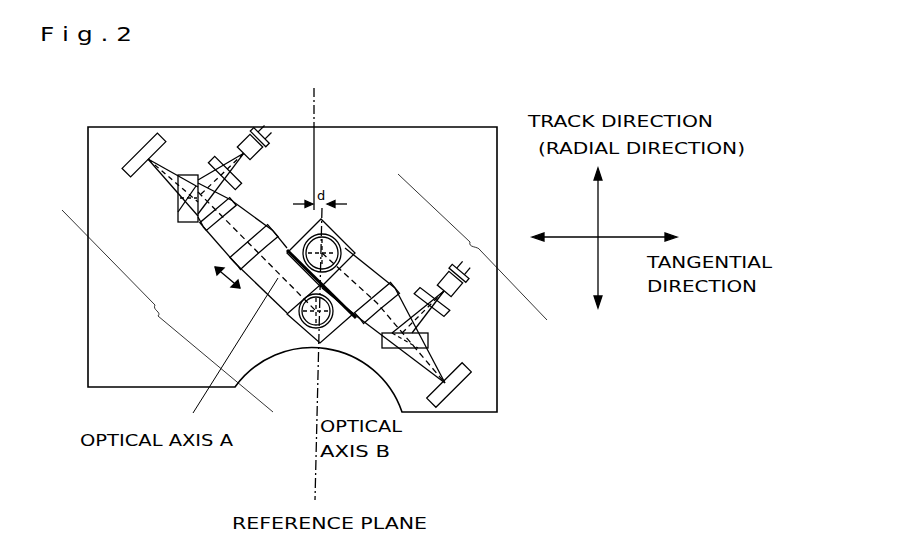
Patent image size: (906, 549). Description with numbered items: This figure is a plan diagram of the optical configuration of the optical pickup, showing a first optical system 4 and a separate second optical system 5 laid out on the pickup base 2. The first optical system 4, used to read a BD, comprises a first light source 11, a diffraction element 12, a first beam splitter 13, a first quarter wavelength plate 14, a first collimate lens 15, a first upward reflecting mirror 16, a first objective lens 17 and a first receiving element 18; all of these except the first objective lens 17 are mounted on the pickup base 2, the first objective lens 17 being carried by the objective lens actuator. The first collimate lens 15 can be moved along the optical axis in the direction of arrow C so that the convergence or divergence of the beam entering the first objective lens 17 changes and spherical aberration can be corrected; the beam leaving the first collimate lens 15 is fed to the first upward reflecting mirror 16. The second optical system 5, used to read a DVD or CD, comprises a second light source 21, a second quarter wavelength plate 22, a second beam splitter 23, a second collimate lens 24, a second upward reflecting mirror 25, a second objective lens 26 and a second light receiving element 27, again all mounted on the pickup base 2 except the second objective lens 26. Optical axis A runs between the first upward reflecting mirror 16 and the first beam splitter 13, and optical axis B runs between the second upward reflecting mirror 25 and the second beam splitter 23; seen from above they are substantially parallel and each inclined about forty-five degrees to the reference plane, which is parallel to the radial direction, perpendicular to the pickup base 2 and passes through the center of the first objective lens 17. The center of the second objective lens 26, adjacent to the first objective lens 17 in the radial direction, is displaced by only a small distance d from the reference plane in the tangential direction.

The pickup base 2 is at (408, 126).
The first optical system 4 is at (167, 311).
The second optical system 5 is at (472, 247).
The first light source 11 is at (251, 160).
The diffraction element 12 is at (212, 162).
The first beam splitter 13 is at (180, 222).
The first quarter wavelength plate 14 is at (233, 206).
The first collimate lens 15 is at (250, 268).
The first upward reflecting mirror 16 is at (317, 345).
The first objective lens 17 is at (300, 318).
The first receiving element 18 is at (136, 150).
The second light source 21 is at (460, 291).
The second quarter wavelength plate 22 is at (438, 313).
The second beam splitter 23 is at (429, 341).
The second collimate lens 24 is at (392, 286).
The second upward reflecting mirror 25 is at (334, 232).
The second objective lens 26 is at (345, 250).
The second light receiving element 27 is at (458, 388).